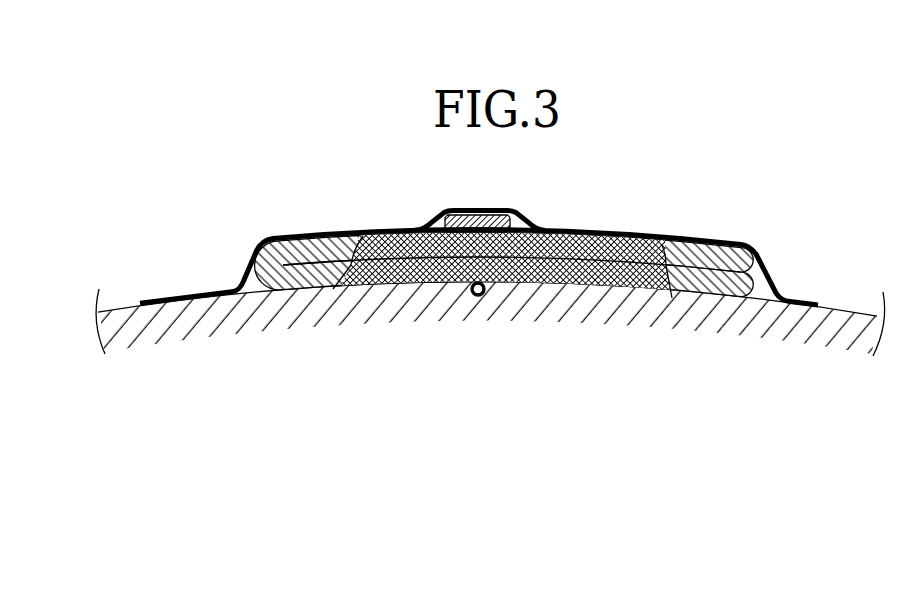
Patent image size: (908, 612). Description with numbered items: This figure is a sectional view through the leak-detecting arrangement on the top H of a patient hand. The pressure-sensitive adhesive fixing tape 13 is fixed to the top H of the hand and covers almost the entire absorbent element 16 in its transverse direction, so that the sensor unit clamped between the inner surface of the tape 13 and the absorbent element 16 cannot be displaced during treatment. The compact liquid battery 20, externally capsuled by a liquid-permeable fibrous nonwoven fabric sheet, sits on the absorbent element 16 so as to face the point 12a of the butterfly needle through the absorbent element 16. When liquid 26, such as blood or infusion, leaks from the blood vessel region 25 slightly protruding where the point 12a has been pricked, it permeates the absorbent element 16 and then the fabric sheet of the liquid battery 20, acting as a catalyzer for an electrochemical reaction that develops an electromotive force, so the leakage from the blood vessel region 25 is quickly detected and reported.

The point of the butterfly needle 12a is at (486, 296).
The pressure-sensitive adhesive fixing tape 13 is at (773, 281).
The absorbent element 16 is at (715, 258).
The liquid battery 20 is at (480, 224).
The blood vessel region 25 is at (467, 272).
The liquid 26 is at (437, 240).
The top of the patient hand H is at (833, 322).